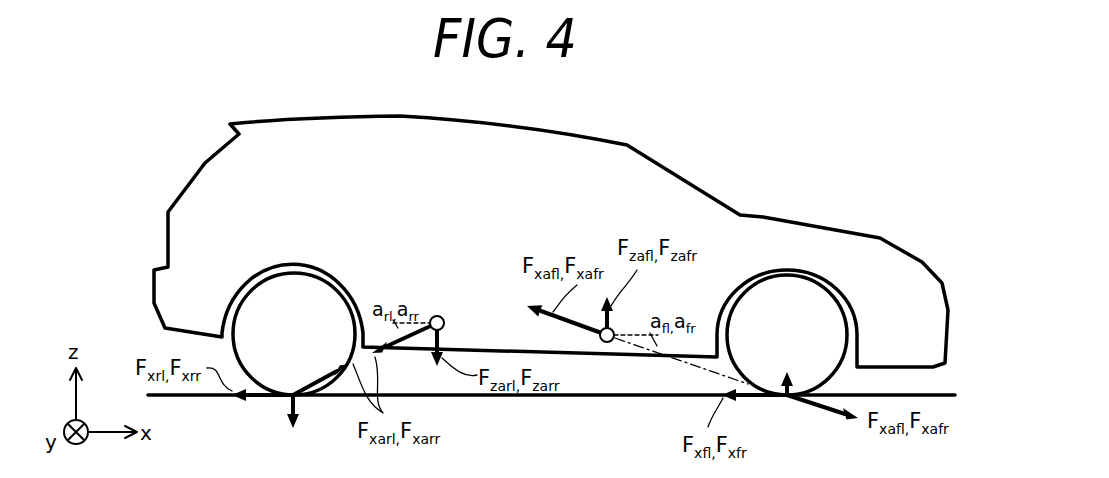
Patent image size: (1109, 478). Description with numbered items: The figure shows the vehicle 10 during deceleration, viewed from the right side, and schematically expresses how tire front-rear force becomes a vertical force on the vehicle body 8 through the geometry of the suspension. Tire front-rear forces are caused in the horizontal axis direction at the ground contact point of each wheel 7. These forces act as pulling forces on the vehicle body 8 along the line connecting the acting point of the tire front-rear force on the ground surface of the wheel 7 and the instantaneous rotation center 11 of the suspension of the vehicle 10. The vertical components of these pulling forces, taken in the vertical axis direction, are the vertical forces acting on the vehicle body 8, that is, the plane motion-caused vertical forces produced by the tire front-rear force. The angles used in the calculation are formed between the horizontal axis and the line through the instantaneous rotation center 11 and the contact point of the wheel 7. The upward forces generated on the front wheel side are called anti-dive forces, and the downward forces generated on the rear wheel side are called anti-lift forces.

The wheel 7 is at (265, 280).
The vehicle body 8 is at (675, 172).
The vehicle 10 is at (801, 167).
The instantaneous rotation center 11 is at (438, 316).